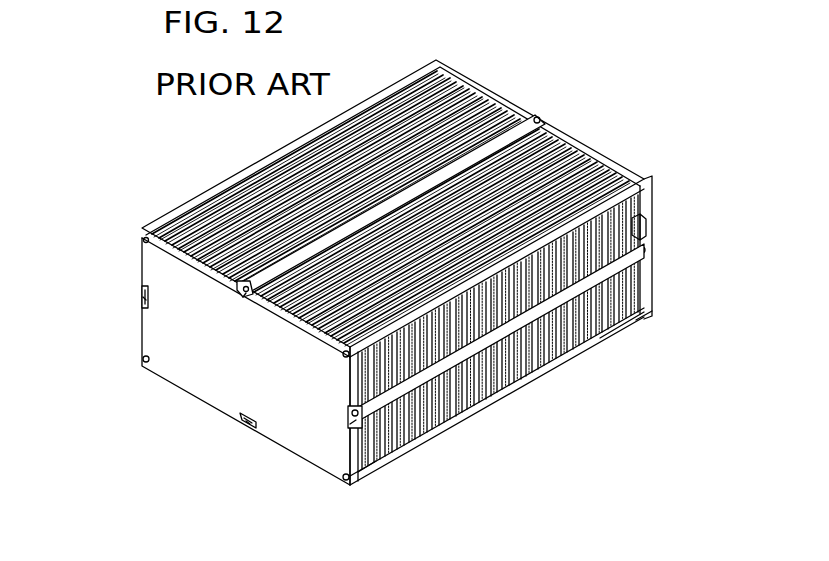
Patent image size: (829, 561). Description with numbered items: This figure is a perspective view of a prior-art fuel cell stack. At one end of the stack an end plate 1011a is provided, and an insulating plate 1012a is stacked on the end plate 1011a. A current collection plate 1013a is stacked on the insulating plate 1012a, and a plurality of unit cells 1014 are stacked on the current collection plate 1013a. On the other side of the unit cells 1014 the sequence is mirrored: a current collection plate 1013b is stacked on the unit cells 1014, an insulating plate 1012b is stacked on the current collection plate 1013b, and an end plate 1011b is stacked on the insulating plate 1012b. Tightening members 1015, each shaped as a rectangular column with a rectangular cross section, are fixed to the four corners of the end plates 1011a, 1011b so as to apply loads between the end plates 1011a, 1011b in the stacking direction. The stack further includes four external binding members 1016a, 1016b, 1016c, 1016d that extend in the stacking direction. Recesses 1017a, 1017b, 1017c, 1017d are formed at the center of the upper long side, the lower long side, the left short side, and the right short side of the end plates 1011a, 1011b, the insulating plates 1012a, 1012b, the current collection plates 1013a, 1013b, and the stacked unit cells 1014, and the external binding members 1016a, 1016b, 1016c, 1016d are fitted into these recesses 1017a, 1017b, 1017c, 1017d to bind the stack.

The end plate 1011a is at (200, 383).
The end plate 1011b is at (651, 204).
The insulating plate 1012a is at (372, 480).
The insulating plate 1012b is at (643, 317).
The current collection plate 1013a is at (377, 465).
The current collection plate 1013b is at (640, 323).
The unit cells 1014 is at (500, 387).
The tightening members 1015 is at (632, 185).
The external binding member 1016a is at (247, 298).
The external binding member 1016b is at (246, 430).
The external binding member 1016c is at (140, 291).
The external binding member 1016d is at (348, 416).
The recess 1017a is at (240, 287).
The recess 1017b is at (241, 423).
The recess 1017c is at (142, 298).
The recess 1017d is at (352, 428).